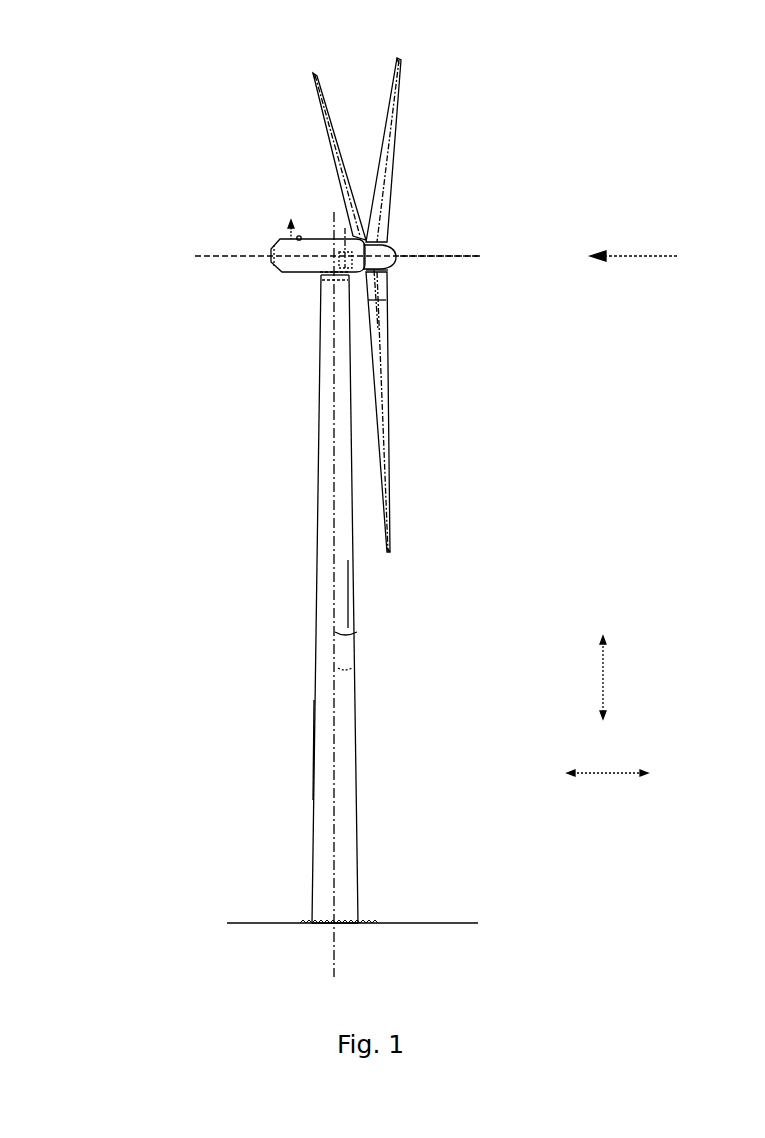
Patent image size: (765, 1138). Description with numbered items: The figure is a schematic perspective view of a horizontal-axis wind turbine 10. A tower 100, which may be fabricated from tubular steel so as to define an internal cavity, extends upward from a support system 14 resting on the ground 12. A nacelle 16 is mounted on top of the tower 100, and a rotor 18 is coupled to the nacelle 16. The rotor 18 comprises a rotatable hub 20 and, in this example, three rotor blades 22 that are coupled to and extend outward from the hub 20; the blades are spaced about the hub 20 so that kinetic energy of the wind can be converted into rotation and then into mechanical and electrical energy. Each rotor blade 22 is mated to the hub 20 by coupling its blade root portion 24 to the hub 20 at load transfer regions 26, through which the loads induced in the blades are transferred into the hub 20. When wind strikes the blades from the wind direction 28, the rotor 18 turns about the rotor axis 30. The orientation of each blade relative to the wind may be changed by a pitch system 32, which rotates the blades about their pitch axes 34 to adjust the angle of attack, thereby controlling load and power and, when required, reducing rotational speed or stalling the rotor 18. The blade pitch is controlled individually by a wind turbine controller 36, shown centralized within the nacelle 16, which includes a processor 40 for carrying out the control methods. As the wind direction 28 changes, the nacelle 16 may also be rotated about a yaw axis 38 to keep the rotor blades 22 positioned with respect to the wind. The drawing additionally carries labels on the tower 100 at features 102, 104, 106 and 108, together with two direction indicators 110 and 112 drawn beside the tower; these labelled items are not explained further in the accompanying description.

The wind turbine 10 is at (131, 81).
The ground 12 is at (247, 922).
The support system 14 is at (300, 920).
The nacelle 16 is at (298, 276).
The rotor 18 is at (402, 173).
The rotatable hub 20 is at (393, 252).
The rotor blade 22 is at (332, 130).
The blade root portion 24 is at (384, 345).
The load transfer regions 26 is at (387, 281).
The wind direction 28 is at (650, 256).
The rotor axis 30 is at (445, 257).
The pitch system 32 is at (370, 294).
The pitch axes 34 is at (309, 70).
The wind turbine controller 36 is at (322, 303).
The yaw axis 38 is at (363, 630).
The processor 40 is at (345, 230).
The tower 100 is at (318, 575).
The upper tower end 102 is at (322, 279).
The lower tower end 104 is at (350, 922).
The tower section 106 is at (350, 670).
The tower outer surface 108 is at (313, 730).
The vertical direction 110 is at (604, 684).
The horizontal direction 112 is at (610, 771).